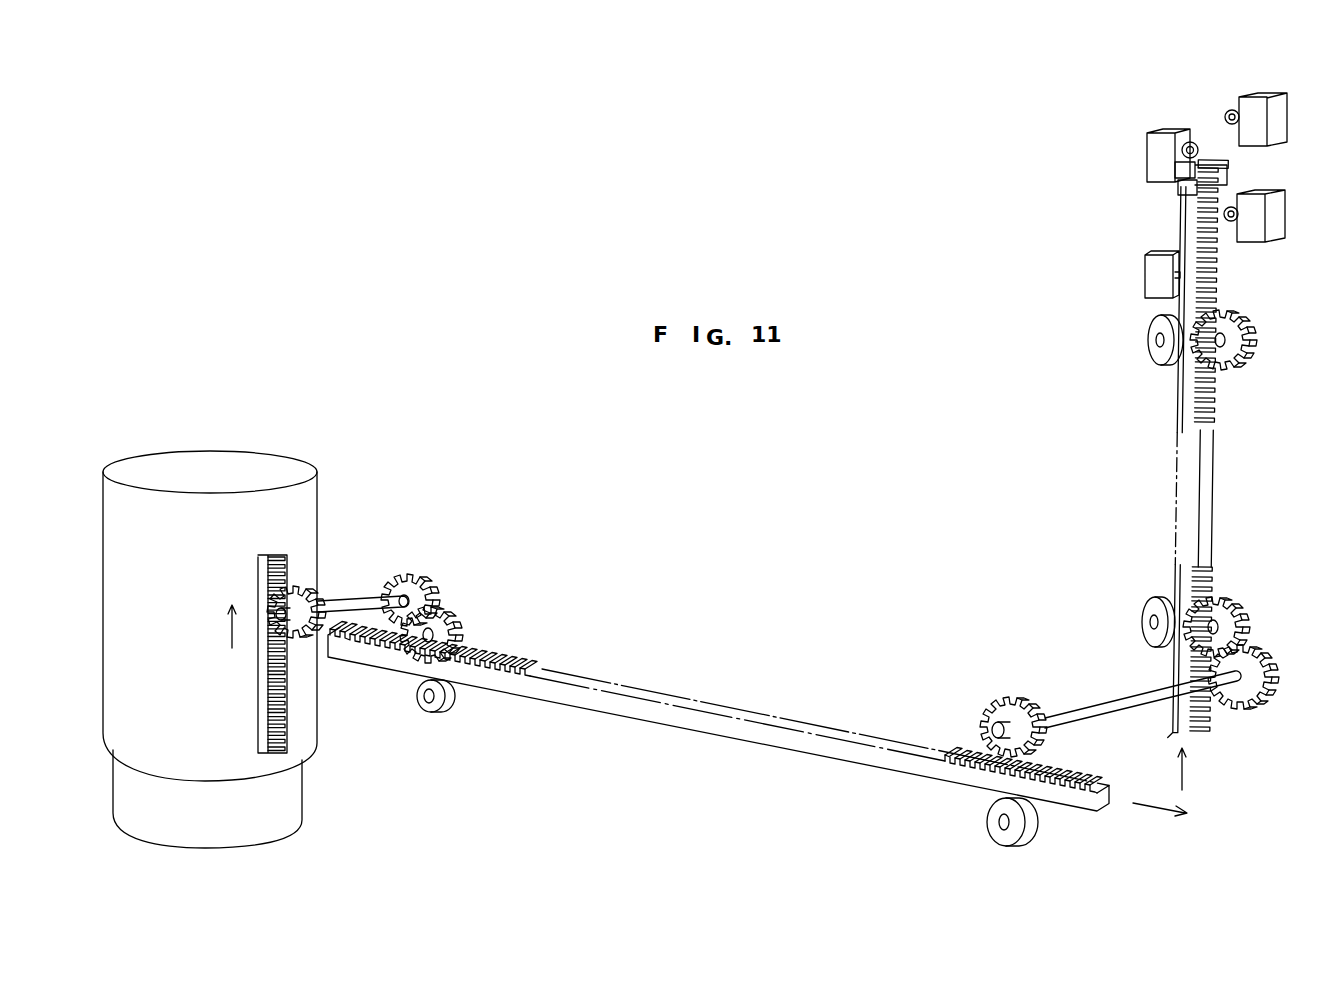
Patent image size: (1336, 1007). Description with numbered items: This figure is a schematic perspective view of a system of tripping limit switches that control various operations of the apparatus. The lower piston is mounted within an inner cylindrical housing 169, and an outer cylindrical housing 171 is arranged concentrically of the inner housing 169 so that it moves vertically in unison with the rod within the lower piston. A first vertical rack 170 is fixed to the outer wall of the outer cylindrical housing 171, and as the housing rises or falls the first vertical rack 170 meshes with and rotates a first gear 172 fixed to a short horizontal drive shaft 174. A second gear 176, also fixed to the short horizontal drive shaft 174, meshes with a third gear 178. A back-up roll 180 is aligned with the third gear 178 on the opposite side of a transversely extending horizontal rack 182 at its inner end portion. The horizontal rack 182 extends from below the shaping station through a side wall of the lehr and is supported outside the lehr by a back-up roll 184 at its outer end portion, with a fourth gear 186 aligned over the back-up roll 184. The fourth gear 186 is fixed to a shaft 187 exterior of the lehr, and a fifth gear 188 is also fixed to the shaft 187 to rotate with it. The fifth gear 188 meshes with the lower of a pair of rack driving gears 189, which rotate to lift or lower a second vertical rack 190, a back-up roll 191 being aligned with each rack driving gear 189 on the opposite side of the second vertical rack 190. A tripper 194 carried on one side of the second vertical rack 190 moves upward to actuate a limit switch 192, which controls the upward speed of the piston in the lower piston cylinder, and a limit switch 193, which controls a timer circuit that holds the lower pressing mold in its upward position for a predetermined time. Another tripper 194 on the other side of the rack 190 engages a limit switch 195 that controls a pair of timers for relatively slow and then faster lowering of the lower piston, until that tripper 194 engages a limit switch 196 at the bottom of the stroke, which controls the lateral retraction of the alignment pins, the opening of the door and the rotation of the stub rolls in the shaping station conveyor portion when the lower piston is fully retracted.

The inner cylindrical housing 169 is at (292, 803).
The first vertical rack 170 is at (262, 578).
The outer cylindrical housing 171 is at (312, 511).
The first gear 172 is at (297, 592).
The short horizontal drive shaft 174 is at (374, 600).
The second gear 176 is at (415, 590).
The third gear 178 is at (446, 626).
The back-up roll 180 is at (433, 706).
The horizontal rack 182 is at (528, 666).
The back-up roll 184 is at (990, 817).
The fourth gear 186 is at (1004, 708).
The shaft 187 is at (1136, 700).
The fifth gear 188 is at (1240, 702).
The rack driving gears 189 is at (1226, 360).
The second vertical rack 190 is at (1216, 424).
The back-up roll 191 is at (1154, 355).
The limit switch 192 is at (1250, 235).
The limit switch 193 is at (1243, 100).
The tripper 194 is at (1228, 178).
The limit switch 195 is at (1153, 148).
The limit switch 196 is at (1146, 275).